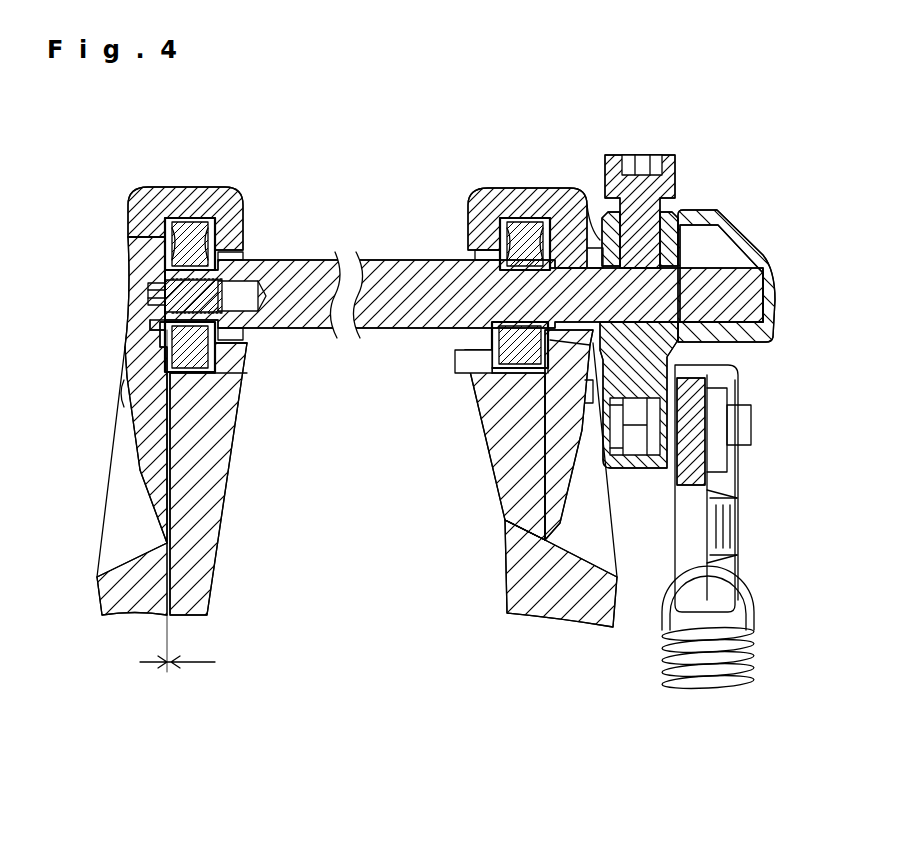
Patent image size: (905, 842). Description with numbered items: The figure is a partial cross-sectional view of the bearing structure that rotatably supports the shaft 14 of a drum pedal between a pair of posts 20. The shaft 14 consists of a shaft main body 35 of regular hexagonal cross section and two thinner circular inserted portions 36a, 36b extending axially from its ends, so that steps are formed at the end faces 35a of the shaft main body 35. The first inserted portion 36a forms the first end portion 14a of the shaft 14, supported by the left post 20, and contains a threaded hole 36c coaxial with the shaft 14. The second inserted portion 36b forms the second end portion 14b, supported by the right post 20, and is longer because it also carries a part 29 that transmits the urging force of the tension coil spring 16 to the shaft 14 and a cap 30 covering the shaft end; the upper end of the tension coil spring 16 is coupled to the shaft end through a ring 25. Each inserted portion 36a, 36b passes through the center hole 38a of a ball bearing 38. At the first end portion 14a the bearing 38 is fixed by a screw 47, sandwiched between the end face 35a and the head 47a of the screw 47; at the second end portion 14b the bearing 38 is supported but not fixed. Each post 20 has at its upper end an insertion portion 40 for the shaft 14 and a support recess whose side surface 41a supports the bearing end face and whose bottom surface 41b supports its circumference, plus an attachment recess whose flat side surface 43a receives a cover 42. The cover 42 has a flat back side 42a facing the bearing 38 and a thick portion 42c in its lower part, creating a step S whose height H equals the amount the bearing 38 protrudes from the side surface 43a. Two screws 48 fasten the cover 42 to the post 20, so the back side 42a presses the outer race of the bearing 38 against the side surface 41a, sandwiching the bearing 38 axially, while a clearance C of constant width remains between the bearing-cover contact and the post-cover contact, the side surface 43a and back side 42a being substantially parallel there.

The shaft 14 is at (389, 240).
The first end portion 14a is at (165, 272).
The second end portion 14b is at (777, 283).
The tension coil spring 16 is at (758, 652).
The post 20 is at (100, 605).
The ring 25 is at (745, 560).
The part 29 is at (676, 200).
The cap 30 is at (766, 244).
The shaft main body 35 is at (300, 258).
The end face 35a is at (244, 256).
The first inserted portion 36a is at (98, 283).
The second inserted portion 36b is at (810, 297).
The threaded hole 36c is at (150, 330).
The bearing 38 is at (195, 213).
The center hole 38a is at (186, 262).
The insertion portion 40 is at (244, 340).
The side surface 41a is at (235, 378).
The bottom surface 41b is at (240, 398).
The cover 42 is at (136, 186).
The back side 42a is at (165, 372).
The thick portion 42c is at (200, 525).
The side surface 43a is at (140, 432).
The screw 47 is at (146, 290).
The head 47a is at (160, 305).
The screws 48 is at (122, 406).
The clearance C is at (168, 462).
The step S is at (180, 470).
The height H is at (179, 651).